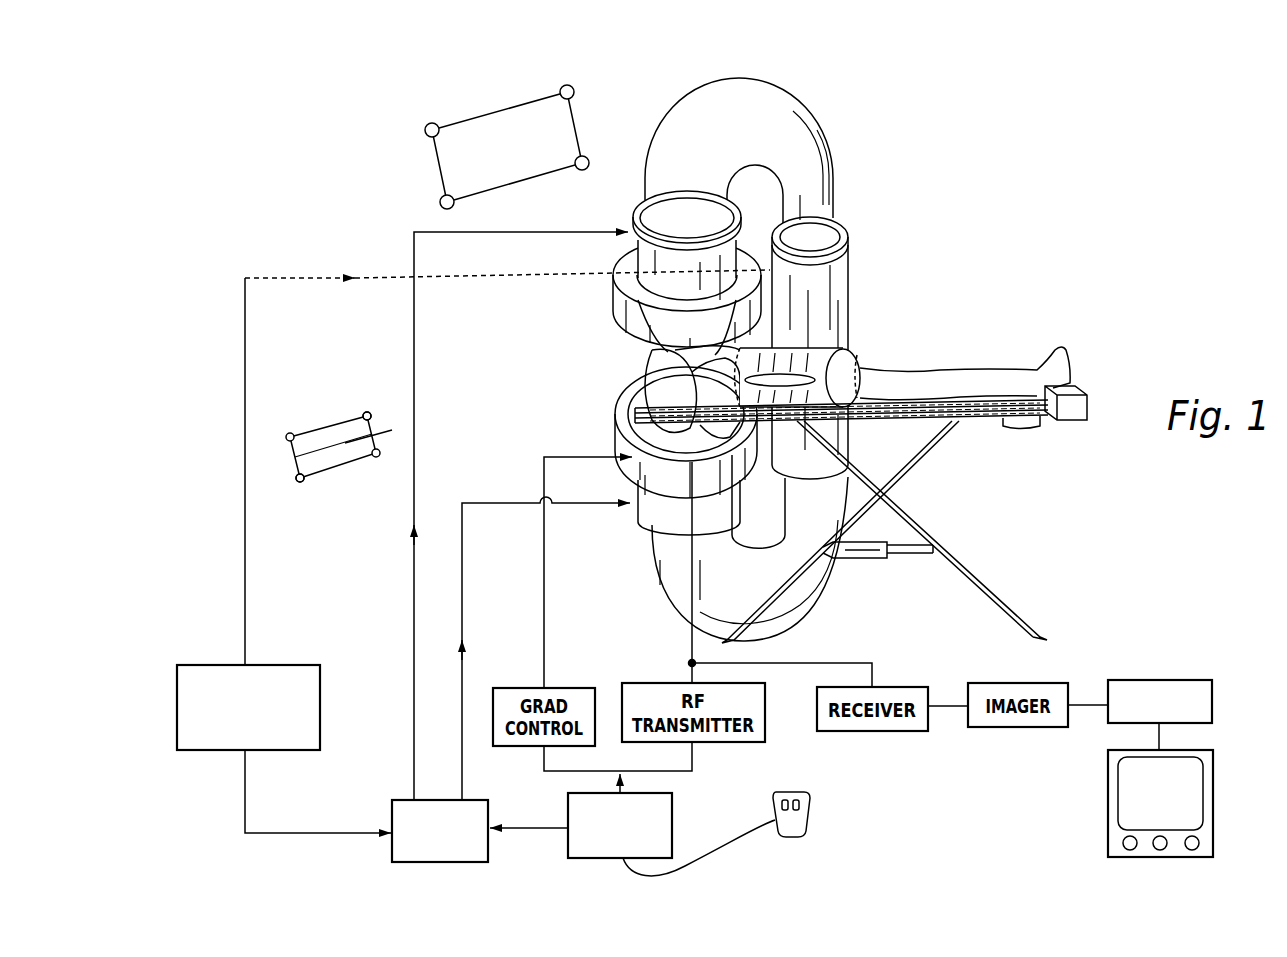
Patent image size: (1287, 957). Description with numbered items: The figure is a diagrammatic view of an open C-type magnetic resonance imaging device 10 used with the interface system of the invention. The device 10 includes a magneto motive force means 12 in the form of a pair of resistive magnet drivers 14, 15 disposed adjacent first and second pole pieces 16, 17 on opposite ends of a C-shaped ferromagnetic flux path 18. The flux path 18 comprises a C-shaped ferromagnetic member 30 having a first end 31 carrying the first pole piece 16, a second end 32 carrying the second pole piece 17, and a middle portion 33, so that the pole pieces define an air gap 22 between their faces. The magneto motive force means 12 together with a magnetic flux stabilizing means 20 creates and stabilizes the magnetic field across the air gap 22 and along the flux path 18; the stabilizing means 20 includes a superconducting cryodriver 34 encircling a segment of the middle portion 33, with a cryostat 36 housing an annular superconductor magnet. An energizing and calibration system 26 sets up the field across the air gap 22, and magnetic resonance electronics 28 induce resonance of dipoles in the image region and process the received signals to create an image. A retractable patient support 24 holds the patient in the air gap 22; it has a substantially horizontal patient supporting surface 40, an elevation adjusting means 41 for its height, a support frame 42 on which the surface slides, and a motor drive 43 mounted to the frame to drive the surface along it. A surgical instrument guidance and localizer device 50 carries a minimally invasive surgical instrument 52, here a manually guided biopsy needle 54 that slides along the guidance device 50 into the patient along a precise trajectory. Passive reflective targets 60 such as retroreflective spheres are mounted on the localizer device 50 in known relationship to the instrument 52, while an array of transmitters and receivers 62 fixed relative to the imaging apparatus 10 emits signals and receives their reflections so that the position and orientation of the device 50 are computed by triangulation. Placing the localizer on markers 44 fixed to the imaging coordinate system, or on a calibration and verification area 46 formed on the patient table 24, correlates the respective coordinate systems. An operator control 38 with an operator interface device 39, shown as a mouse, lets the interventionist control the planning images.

The magnetic resonance imaging device 10 is at (850, 365).
The magneto motive force means 12 is at (639, 220).
The resistive magnet driver 14 is at (651, 252).
The resistive magnet driver 15 is at (724, 559).
The first pole piece 16 is at (641, 293).
The second pole piece 17 is at (646, 456).
The C-shaped ferromagnetic flux path 18 is at (764, 150).
The magnetic flux stabilizing means 20 is at (486, 547).
The air gap 22 is at (650, 413).
The retractable patient support 24 is at (896, 362).
The energizing and calibration system 26 is at (281, 555).
The magnetic resonance electronics 28 is at (1164, 668).
The C-shaped ferromagnetic member 30 is at (864, 169).
The first end 31 is at (761, 159).
The second end 32 is at (762, 501).
The middle portion 33 is at (863, 192).
The superconducting cryodriver 34 is at (853, 241).
The cryostat 36 is at (845, 362).
The operator control 38 is at (609, 816).
The operator interface device 39 is at (753, 834).
The patient supporting surface 40 is at (881, 359).
The elevation adjusting means 41 is at (878, 577).
The support frame 42 is at (884, 530).
The motor drive 43 is at (1037, 447).
The markers 44 is at (644, 327).
The calibration and verification area 46 is at (1085, 415).
The surgical instrument guidance and localizer device 50 is at (327, 490).
The minimally invasive surgical instrument 52 is at (306, 385).
The biopsy needle 54 is at (370, 475).
The passive reflective targets 60 is at (342, 433).
The array of transmitters and receivers 62 is at (496, 147).